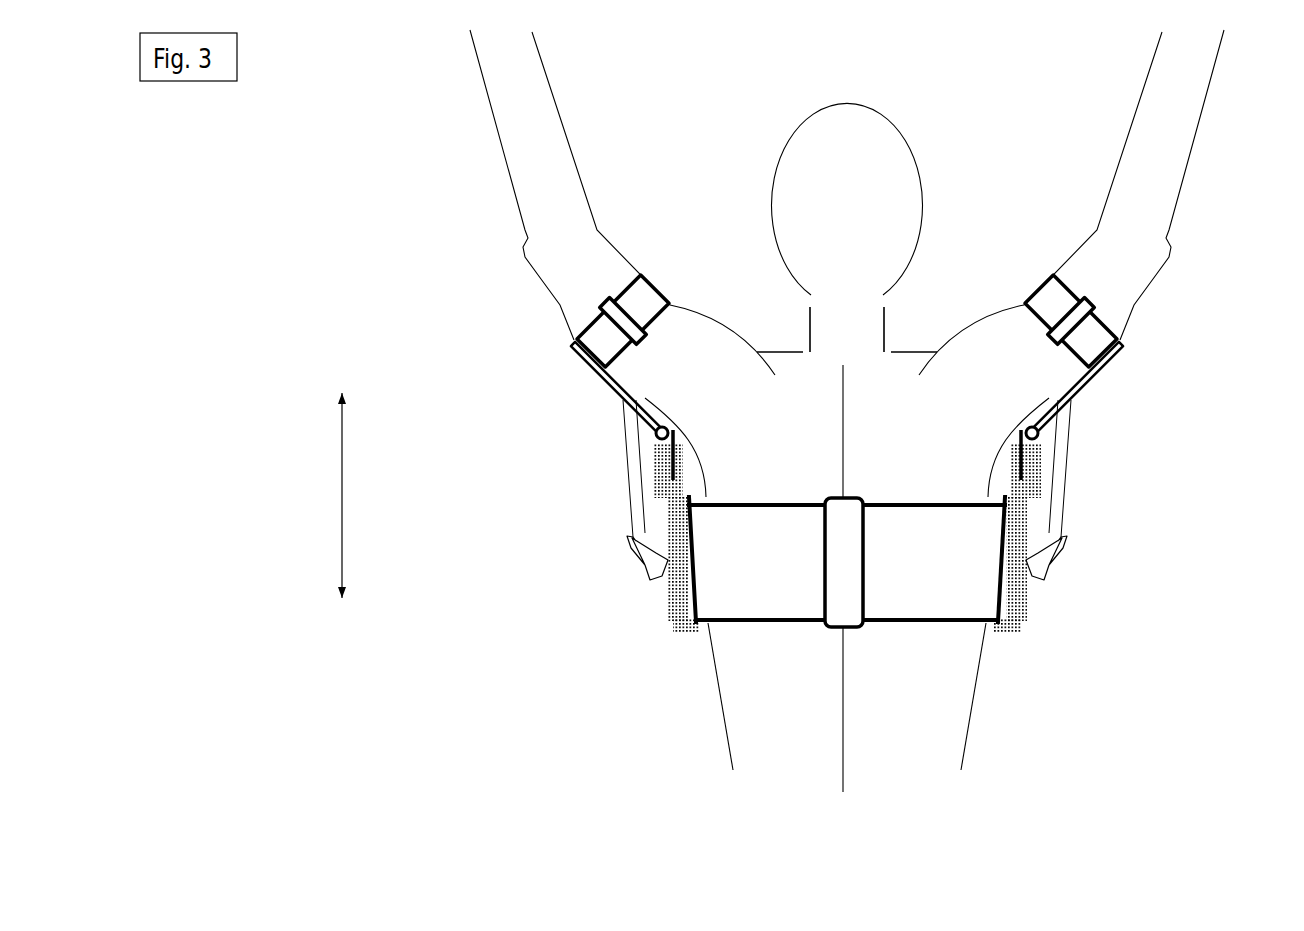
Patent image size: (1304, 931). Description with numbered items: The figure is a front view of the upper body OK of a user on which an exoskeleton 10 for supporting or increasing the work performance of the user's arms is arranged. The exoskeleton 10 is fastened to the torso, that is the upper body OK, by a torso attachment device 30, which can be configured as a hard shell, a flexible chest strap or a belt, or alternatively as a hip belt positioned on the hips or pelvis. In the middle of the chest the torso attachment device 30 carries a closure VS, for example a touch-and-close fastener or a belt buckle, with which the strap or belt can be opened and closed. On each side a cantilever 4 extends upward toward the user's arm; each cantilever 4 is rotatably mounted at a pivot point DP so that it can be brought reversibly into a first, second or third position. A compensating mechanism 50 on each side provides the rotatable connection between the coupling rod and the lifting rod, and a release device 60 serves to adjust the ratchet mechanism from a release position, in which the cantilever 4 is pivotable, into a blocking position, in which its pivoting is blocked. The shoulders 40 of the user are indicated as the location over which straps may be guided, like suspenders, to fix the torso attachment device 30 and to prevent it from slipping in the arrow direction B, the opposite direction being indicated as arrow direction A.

The exoskeleton 10 is at (1070, 643).
The torso attachment device 30 is at (921, 598).
The cantilever 4 is at (600, 371).
The shoulders 40 is at (772, 357).
The compensating mechanism 50 is at (633, 562).
The release device 60 is at (663, 447).
The pivot point DP is at (654, 434).
The closure VS is at (845, 580).
The upper body OK is at (963, 452).
The arrow direction A is at (331, 495).
The arrow direction B is at (325, 589).